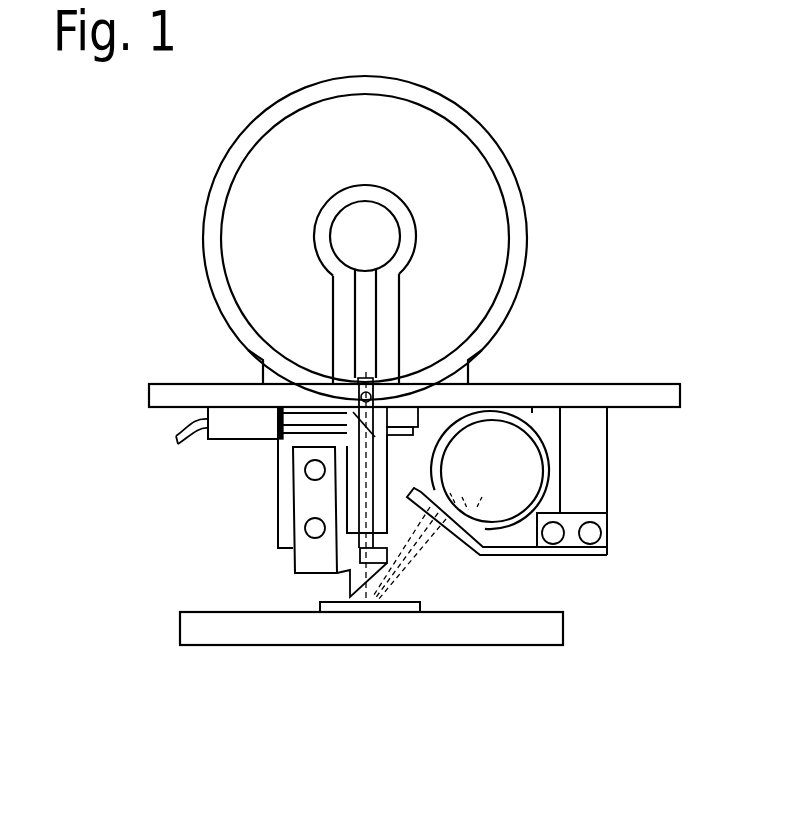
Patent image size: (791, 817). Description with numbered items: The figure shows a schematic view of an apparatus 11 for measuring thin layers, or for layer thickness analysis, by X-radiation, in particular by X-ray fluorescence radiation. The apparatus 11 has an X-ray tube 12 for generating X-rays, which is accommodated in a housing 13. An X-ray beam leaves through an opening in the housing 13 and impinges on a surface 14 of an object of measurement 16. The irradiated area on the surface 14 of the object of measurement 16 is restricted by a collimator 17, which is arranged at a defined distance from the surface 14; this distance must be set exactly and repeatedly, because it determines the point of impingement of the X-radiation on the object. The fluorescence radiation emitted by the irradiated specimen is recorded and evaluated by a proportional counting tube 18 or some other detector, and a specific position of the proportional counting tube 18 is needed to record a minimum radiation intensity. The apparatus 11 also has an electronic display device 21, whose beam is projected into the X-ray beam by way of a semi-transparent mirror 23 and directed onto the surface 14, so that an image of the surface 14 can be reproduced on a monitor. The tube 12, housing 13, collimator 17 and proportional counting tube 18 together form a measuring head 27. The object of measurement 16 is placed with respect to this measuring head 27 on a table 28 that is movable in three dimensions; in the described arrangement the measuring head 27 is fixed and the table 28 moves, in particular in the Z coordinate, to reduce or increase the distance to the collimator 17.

The apparatus 11 is at (512, 112).
The X-ray tube 12 is at (432, 226).
The housing 13 is at (508, 266).
The surface 14 is at (403, 593).
The object of measurement 16 is at (332, 607).
The collimator 17 is at (350, 551).
The proportional counting tube 18 is at (512, 448).
The electronic display device 21 is at (228, 430).
The semi-transparent mirror 23 is at (382, 432).
The measuring head 27 is at (158, 354).
The table 28 is at (240, 632).